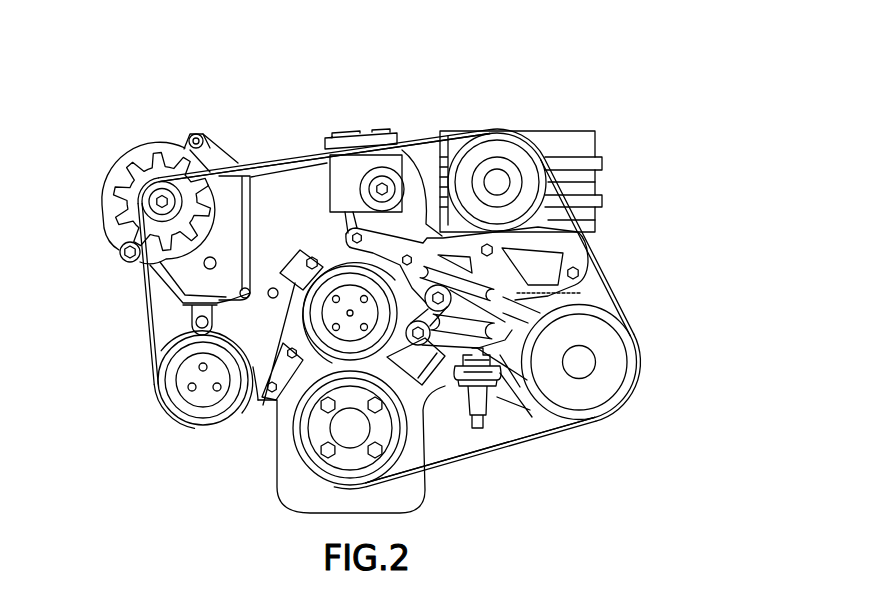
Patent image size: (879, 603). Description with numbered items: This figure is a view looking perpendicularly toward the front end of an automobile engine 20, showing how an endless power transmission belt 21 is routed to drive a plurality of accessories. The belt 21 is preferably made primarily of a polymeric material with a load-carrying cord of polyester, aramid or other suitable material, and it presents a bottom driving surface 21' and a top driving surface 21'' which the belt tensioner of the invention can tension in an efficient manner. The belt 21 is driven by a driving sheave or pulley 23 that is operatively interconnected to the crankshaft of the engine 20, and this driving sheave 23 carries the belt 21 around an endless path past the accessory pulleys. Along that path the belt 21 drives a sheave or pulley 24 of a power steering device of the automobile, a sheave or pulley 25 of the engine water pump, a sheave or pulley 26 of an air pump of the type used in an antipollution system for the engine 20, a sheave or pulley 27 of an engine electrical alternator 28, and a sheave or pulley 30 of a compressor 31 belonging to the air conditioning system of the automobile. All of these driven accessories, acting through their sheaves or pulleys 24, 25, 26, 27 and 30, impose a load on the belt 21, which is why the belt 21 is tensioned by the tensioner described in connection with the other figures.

The automobile engine 20 is at (660, 78).
The endless power transmission belt 21 is at (404, 309).
The bottom driving surface 21' is at (480, 459).
The top driving surface 21'' is at (324, 148).
The driving sheave 23 is at (297, 447).
The power steering sheave 24 is at (637, 373).
The water pump sheave 25 is at (342, 257).
The air pump sheave 26 is at (166, 407).
The alternator sheave 27 is at (141, 203).
The engine electrical alternator 28 is at (117, 167).
The compressor sheave 30 is at (493, 133).
The compressor 31 is at (602, 165).